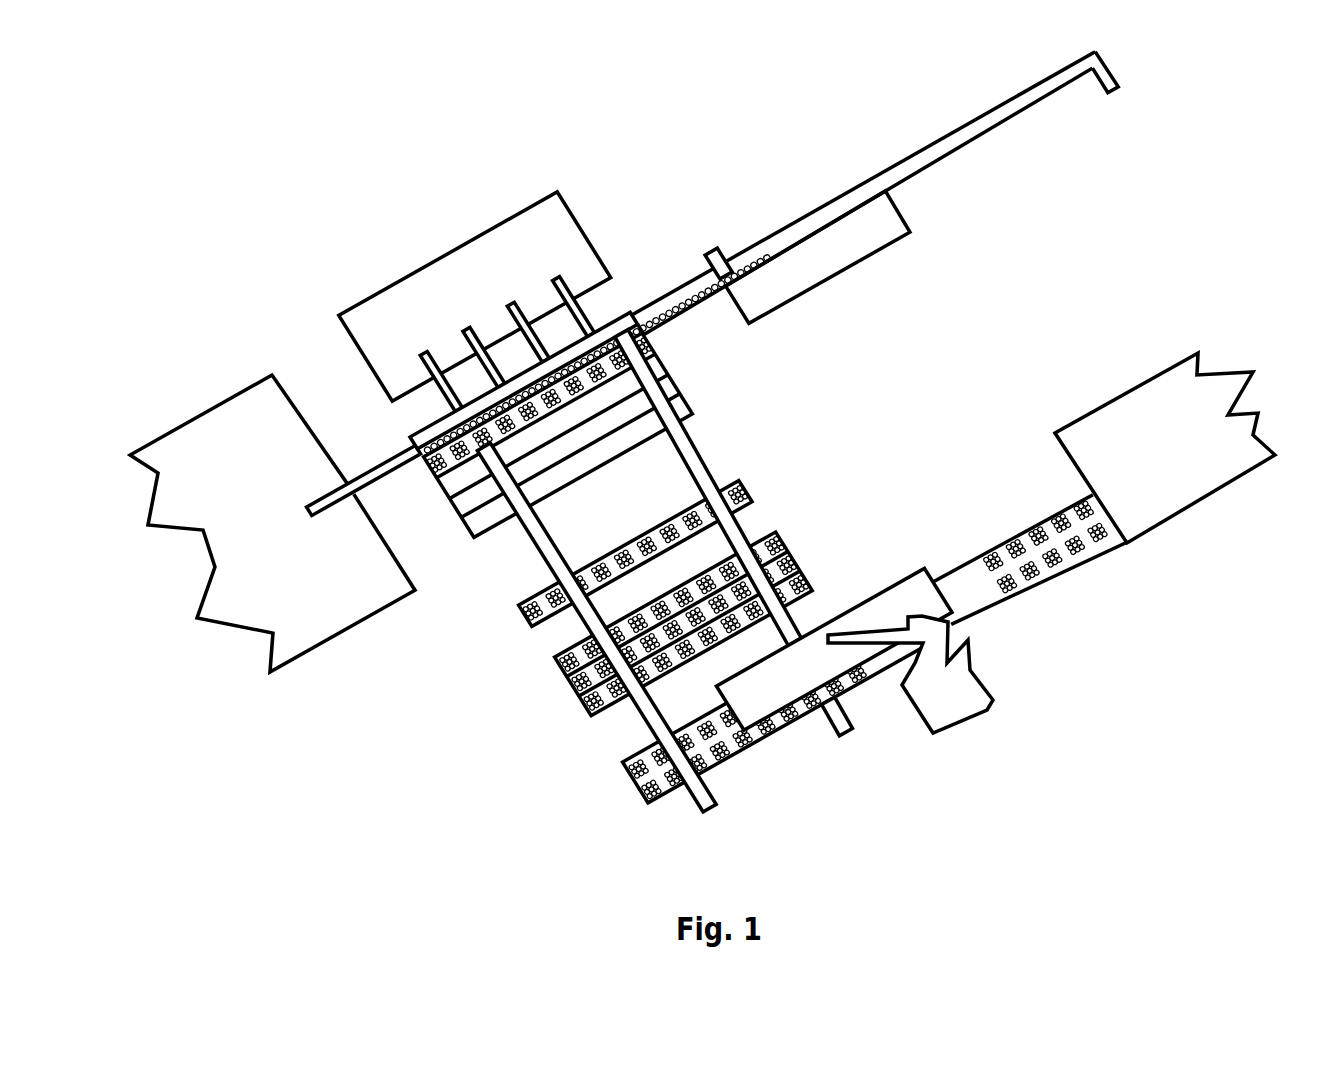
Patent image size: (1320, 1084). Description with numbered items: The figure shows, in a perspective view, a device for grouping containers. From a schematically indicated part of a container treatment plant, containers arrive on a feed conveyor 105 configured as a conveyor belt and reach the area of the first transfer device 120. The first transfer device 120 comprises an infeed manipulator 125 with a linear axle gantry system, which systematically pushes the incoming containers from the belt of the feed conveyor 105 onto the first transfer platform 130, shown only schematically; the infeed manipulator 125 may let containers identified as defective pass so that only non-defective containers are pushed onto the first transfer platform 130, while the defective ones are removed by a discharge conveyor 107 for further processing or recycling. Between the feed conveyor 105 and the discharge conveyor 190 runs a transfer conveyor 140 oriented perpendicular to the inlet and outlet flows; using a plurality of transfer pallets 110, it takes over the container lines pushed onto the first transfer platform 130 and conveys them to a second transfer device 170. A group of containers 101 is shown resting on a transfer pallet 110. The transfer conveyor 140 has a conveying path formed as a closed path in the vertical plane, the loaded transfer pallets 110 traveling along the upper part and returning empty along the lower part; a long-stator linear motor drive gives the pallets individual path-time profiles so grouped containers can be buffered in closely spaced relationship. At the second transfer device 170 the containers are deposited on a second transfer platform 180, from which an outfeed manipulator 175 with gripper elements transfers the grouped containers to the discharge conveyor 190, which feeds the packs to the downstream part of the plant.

The group of containers 101 is at (577, 646).
The feed conveyor 105 is at (365, 477).
The discharge conveyor 107 is at (914, 135).
The transfer pallets 110 is at (473, 540).
The first transfer device 120 is at (332, 329).
The infeed manipulator 125 is at (567, 229).
The first transfer platform 130 is at (653, 347).
The transfer conveyor 140 is at (758, 517).
The second transfer device 170 is at (812, 762).
The outfeed manipulator 175 is at (970, 669).
The second transfer platform 180 is at (623, 768).
The discharge conveyor 190 is at (970, 540).